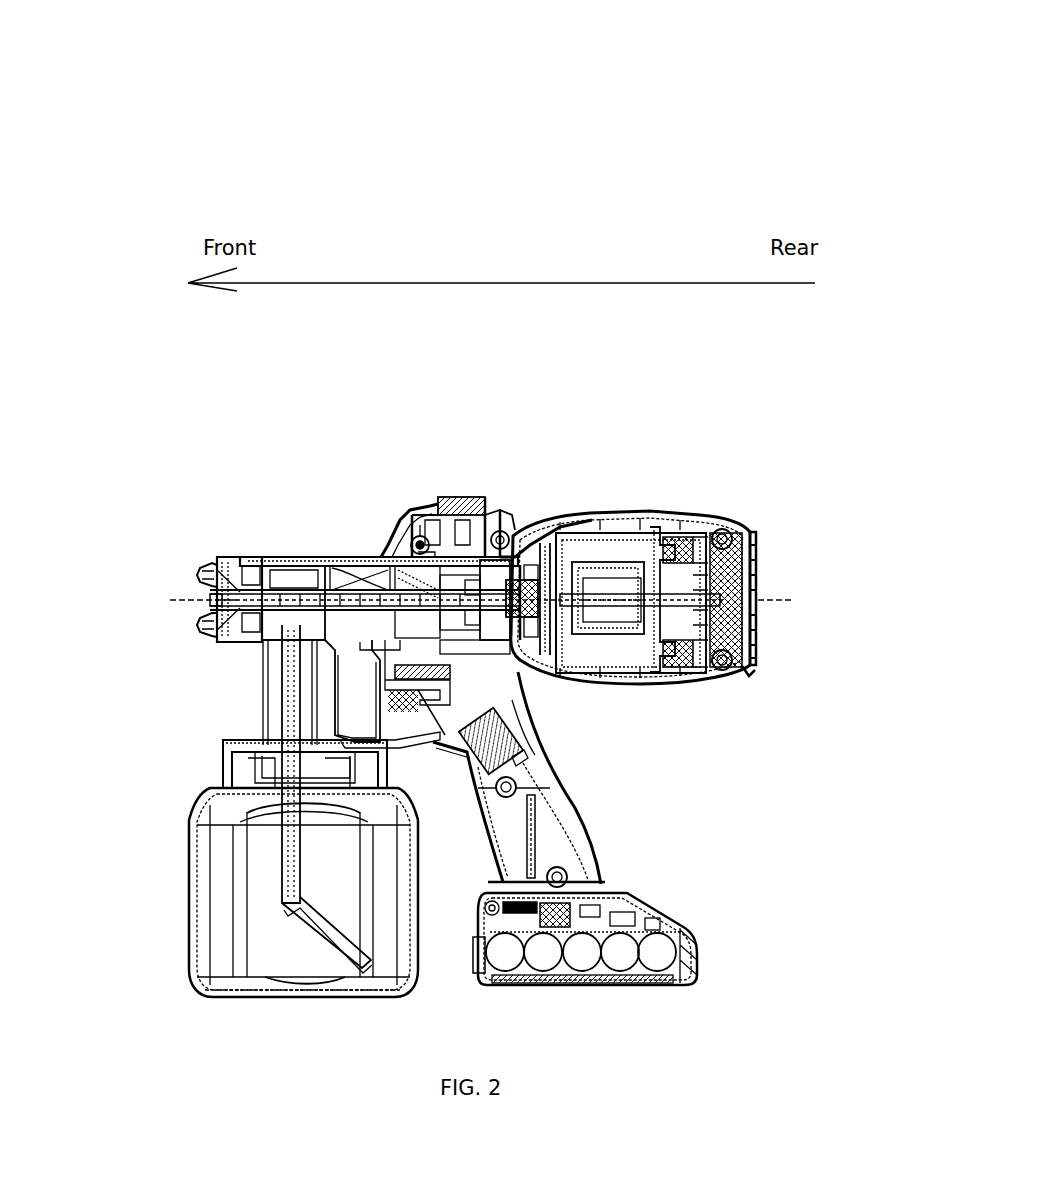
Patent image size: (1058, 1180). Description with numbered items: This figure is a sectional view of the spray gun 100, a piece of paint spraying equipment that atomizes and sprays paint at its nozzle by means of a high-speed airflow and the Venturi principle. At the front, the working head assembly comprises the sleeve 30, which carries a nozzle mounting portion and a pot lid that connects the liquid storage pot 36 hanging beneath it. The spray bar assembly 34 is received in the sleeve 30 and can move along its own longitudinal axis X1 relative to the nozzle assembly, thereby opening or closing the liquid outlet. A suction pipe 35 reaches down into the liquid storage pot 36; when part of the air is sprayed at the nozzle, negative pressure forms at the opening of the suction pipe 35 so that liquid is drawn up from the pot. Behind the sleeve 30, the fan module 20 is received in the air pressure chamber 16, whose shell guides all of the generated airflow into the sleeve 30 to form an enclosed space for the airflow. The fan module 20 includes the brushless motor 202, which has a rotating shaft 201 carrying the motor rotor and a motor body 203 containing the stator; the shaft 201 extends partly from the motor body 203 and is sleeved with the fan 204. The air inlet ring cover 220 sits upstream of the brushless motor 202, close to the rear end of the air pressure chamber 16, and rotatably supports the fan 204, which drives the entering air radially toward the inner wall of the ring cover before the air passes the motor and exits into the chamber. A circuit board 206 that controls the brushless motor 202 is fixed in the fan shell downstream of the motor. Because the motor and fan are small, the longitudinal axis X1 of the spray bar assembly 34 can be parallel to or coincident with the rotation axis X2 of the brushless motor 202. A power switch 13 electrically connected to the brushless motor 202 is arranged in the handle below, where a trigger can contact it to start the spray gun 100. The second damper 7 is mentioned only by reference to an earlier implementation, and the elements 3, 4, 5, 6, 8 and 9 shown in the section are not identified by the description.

The spray gun 100 is at (840, 78).
The rear cover 3 is at (755, 612).
The rear cap 4 is at (752, 560).
The fastener 5 is at (749, 672).
The front housing 6 is at (406, 516).
The second damper 7 is at (707, 534).
The bearing 8 is at (547, 622).
The fan 9 is at (528, 628).
The power switch 13 is at (560, 742).
The air pressure chamber 16 is at (562, 526).
The fan module 20 is at (658, 449).
The rotating shaft 201 is at (645, 612).
The brushless motor 202 is at (610, 528).
The motor body 203 is at (596, 632).
The fan 204 is at (652, 527).
The circuit board 206 is at (522, 516).
The air inlet ring cover 220 is at (667, 535).
The sleeve 30 is at (362, 560).
The spray bar assembly 34 is at (238, 638).
The suction pipe 35 is at (290, 672).
The liquid storage pot 36 is at (205, 852).
The longitudinal axis X1 is at (188, 598).
The rotation axis X2 is at (772, 600).